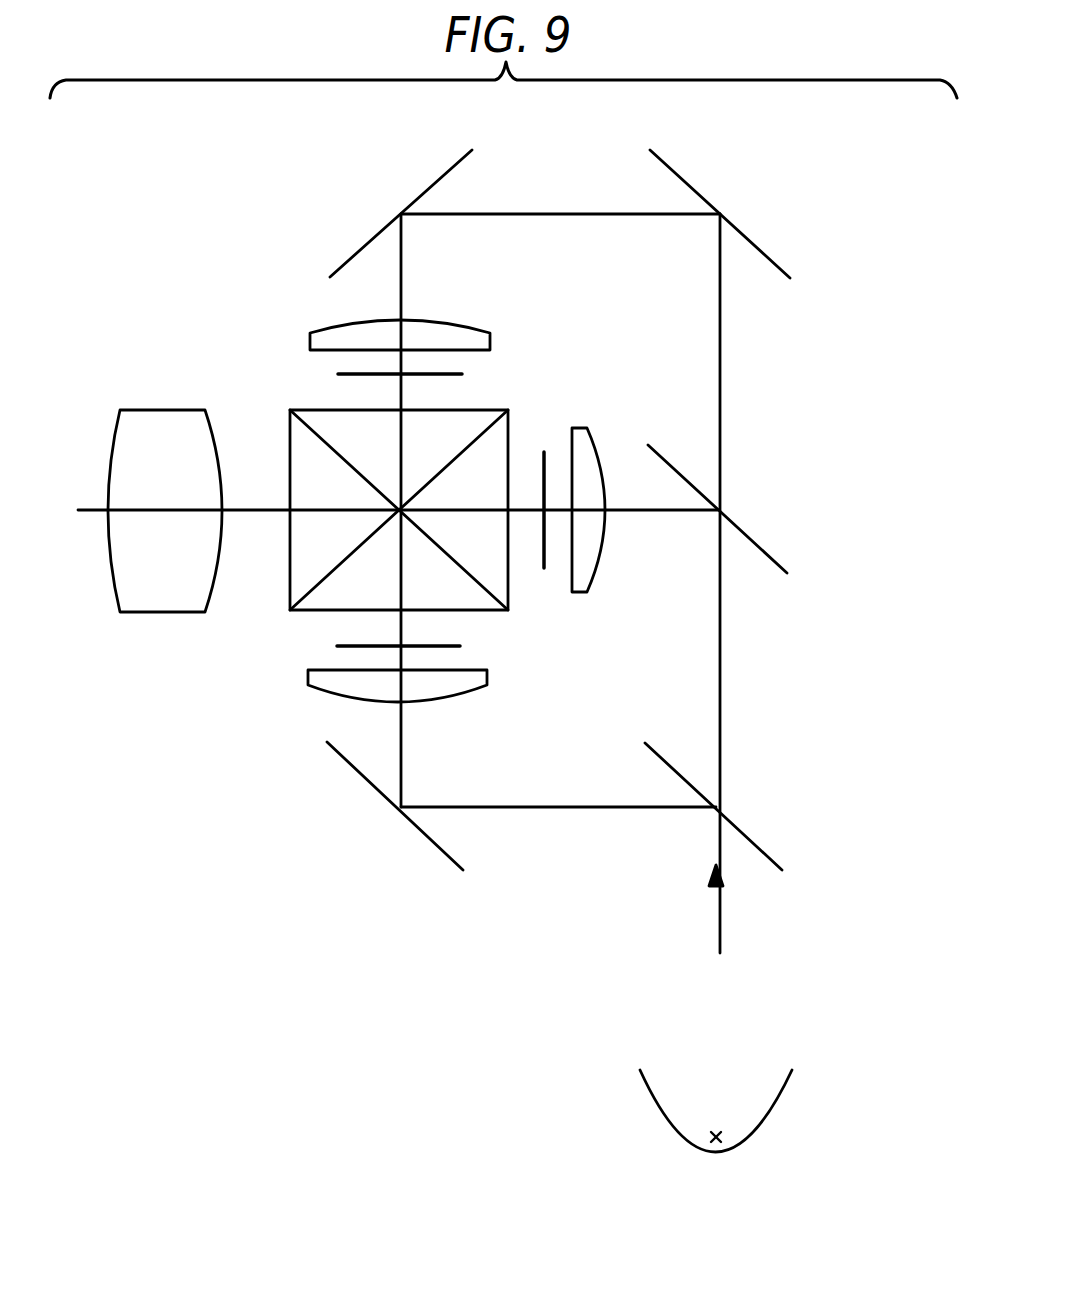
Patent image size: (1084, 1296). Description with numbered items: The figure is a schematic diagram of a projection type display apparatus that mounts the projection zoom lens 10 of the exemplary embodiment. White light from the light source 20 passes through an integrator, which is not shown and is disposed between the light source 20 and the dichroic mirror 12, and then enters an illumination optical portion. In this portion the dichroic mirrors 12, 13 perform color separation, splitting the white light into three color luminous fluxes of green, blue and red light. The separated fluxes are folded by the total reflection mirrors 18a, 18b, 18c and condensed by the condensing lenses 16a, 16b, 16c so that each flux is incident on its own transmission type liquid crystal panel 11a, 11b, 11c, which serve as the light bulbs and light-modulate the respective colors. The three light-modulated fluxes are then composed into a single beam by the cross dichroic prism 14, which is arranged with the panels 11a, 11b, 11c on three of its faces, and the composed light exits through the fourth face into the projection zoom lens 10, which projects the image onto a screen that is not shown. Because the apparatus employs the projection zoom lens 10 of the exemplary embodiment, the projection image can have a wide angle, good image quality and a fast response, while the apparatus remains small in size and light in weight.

The projection zoom lens 10 is at (160, 603).
The cross dichroic prism 14 is at (295, 577).
The transmission type liquid crystal panel 11a is at (447, 644).
The transmission type liquid crystal panel 11b is at (547, 467).
The transmission type liquid crystal panel 11c is at (357, 375).
The condensing lens 16a is at (453, 683).
The condensing lens 16b is at (592, 580).
The condensing lens 16c is at (467, 332).
The total reflection mirror 18a is at (428, 838).
The total reflection mirror 18b is at (760, 248).
The total reflection mirror 18c is at (342, 268).
The dichroic mirror 13 is at (763, 550).
The dichroic mirror 12 is at (762, 847).
The light source 20 is at (819, 1094).